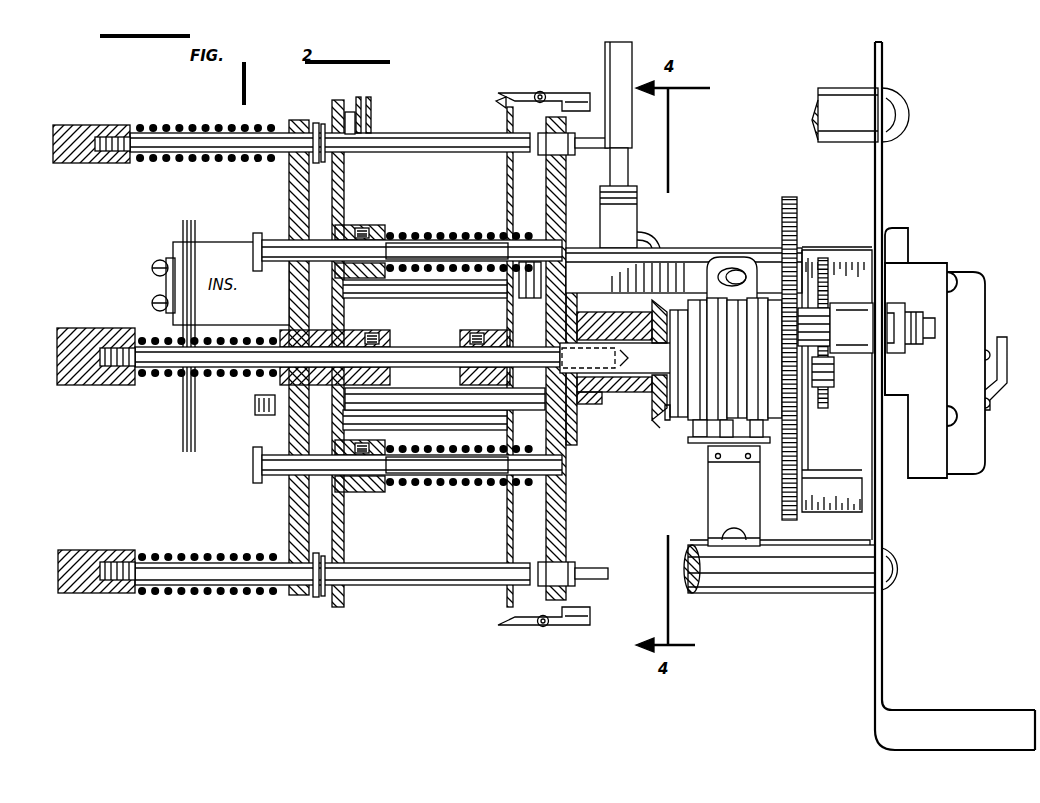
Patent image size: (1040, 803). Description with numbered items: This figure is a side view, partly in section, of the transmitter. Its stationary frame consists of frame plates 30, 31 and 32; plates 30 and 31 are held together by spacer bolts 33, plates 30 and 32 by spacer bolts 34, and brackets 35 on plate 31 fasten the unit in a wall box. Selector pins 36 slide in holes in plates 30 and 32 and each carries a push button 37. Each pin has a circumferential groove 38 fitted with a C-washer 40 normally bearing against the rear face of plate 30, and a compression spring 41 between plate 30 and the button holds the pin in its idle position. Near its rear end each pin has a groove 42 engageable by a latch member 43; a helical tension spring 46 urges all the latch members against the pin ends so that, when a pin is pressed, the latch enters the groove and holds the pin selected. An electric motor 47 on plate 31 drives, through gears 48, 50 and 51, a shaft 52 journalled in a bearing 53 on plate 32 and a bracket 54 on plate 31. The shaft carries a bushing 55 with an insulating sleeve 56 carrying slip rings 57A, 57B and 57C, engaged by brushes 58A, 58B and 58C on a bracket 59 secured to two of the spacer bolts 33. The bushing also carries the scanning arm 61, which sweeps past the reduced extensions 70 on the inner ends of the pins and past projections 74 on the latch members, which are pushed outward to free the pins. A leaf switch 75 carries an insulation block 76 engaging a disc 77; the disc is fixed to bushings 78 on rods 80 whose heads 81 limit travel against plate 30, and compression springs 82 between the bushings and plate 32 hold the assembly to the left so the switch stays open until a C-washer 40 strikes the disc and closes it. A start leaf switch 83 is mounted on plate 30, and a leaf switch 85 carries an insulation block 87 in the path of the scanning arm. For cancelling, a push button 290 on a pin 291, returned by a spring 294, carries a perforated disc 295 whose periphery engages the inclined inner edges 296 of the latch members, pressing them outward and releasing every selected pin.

The frame plate 30 is at (293, 592).
The frame plate 31 is at (885, 610).
The frame plate 32 is at (568, 538).
The spacer bolts 33 is at (698, 246).
The spacer bolts 34 is at (424, 412).
The brackets 35 is at (932, 707).
The selector pins 36 is at (402, 138).
The push button 37 is at (77, 170).
The circumferential groove 38 is at (322, 124).
The C-washer 40 is at (315, 128).
The compression springs 41 is at (165, 124).
The circumferential groove 42 is at (537, 158).
The latch member 43 is at (520, 92).
The helical tension spring 46 is at (540, 90).
The electric motor 47 is at (946, 353).
The gear 48 is at (824, 408).
The gear 50 is at (812, 335).
The gear 51 is at (796, 514).
The shaft 52 is at (616, 358).
The bearing 53 is at (650, 393).
The bracket 54 is at (820, 492).
The bushing 55 is at (650, 322).
The insulating sleeve 56 is at (667, 415).
The slip ring 57A is at (682, 418).
The slip ring 57B is at (728, 300).
The slip ring 57C is at (760, 300).
The brush 58A is at (700, 446).
The brush 58B is at (724, 442).
The brush 58C is at (756, 442).
The bracket 59 is at (712, 518).
The scanning arm 61 is at (650, 412).
The reduced extension 70 is at (594, 150).
The projections 74 is at (588, 92).
The leaf switch 75 is at (372, 100).
The insulation block 76 is at (348, 110).
The disc 77 is at (346, 181).
The bushings 78 is at (368, 226).
The rods 80 is at (413, 240).
The heads 81 is at (253, 233).
The compression springs 82 is at (450, 237).
The leaf switch 83 is at (182, 400).
The leaf switch 85 is at (628, 168).
The insulation block 87 is at (630, 118).
The push button 290 is at (78, 390).
The pin 291 is at (418, 347).
The spring 294 is at (225, 385).
The disc 295 is at (505, 185).
The inclined inner edges 296 is at (495, 106).